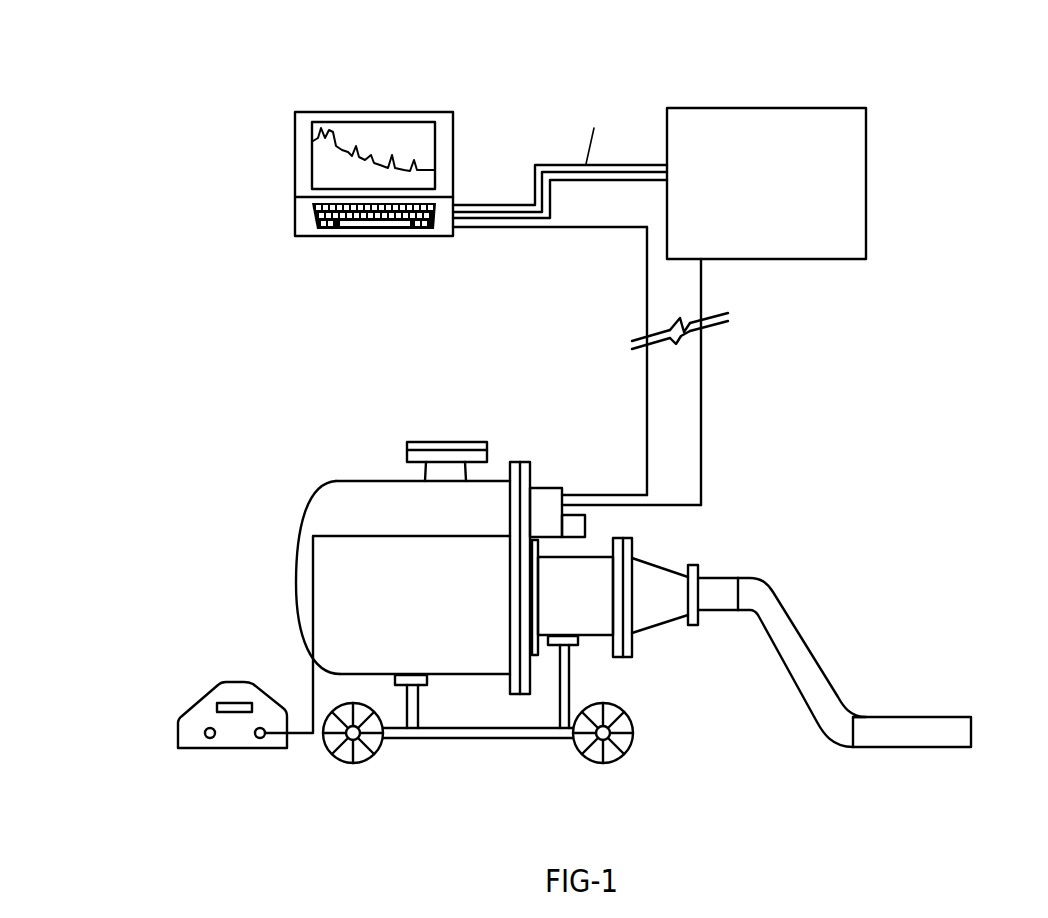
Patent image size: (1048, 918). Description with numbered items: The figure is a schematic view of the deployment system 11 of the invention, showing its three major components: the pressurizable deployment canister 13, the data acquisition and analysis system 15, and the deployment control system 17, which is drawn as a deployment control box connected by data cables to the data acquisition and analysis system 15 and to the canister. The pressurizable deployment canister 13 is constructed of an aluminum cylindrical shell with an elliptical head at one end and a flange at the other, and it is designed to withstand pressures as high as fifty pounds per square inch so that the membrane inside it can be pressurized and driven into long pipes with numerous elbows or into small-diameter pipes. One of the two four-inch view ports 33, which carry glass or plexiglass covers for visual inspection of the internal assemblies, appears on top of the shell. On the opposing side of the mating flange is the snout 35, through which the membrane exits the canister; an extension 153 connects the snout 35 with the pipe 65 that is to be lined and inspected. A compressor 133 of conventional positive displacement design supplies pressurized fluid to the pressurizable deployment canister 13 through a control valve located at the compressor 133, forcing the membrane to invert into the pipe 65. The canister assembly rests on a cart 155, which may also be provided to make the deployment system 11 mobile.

The deployment system 11 is at (203, 397).
The pressurizable deployment canister 13 is at (257, 598).
The data acquisition and analysis system 15 is at (268, 207).
The deployment control system 17 is at (896, 162).
The view port 33 is at (405, 452).
The snout 35 is at (678, 555).
The pipe 65 is at (917, 716).
The compressor 133 is at (245, 743).
The extension 153 is at (807, 650).
The cart 155 is at (588, 683).